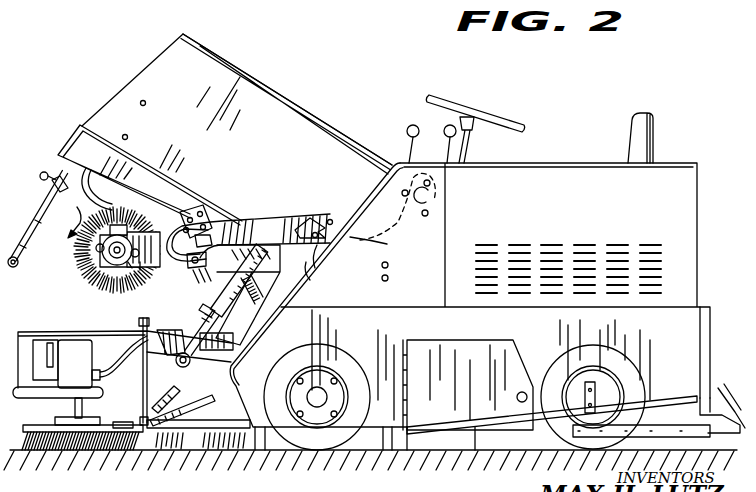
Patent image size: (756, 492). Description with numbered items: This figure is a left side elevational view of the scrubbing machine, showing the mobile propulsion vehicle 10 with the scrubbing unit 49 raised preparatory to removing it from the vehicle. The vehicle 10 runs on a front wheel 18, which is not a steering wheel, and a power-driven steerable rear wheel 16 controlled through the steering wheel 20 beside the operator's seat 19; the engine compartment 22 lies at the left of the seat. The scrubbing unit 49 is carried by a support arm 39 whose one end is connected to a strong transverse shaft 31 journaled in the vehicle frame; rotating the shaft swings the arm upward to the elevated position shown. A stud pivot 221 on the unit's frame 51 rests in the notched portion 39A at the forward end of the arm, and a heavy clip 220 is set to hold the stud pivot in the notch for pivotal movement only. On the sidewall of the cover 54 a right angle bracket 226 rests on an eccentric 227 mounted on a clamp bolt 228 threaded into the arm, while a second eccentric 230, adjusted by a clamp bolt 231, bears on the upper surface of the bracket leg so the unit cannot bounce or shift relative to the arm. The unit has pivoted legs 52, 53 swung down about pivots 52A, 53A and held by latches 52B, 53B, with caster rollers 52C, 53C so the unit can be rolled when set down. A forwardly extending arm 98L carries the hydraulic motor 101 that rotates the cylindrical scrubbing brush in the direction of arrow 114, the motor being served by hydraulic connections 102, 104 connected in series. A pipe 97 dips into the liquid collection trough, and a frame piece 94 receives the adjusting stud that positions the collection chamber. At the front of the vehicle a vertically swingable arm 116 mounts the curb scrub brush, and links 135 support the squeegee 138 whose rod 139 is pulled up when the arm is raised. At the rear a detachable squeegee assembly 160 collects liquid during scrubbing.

The mobile propulsion vehicle 10 is at (547, 180).
The rear wheel 16 is at (622, 360).
The front wheel 18 is at (337, 360).
The operator's seat 19 is at (655, 114).
The steering wheel 20 is at (490, 111).
The engine compartment 22 is at (582, 216).
The transverse shaft 31 is at (437, 203).
The support arm 39 is at (274, 226).
The notched portion of arm 39A is at (216, 233).
The scrubbing unit 49 is at (247, 109).
The frame 51 is at (88, 132).
The leg 52 is at (52, 222).
The leg pivot 52A is at (55, 160).
The leg latch 52B is at (48, 172).
The caster roller 52C is at (8, 275).
The leg 53 is at (250, 348).
The leg pivot 53A is at (194, 270).
The leg latch 53B is at (199, 313).
The caster roller 53C is at (234, 371).
The cover 54 is at (162, 72).
The frame piece 94 is at (261, 278).
The pipe 97 is at (254, 253).
The forwardly extending arm 98L is at (140, 297).
The hydraulic motor 101 is at (113, 256).
The hydraulic connection 102 is at (108, 190).
The hydraulic connection 104 is at (118, 150).
The arrow 114 is at (65, 212).
The vertically swingable arm 116 is at (82, 332).
The link 135 is at (200, 431).
The squeegee 138 is at (235, 452).
The rod 139 is at (138, 380).
The squeegee assembly 160 is at (725, 398).
The clip 220 is at (203, 218).
The stud pivot 221 is at (192, 205).
The right angle bracket 226 is at (295, 210).
The eccentric 227 is at (308, 266).
The clamp bolt 228 is at (322, 259).
The second eccentric 230 is at (329, 214).
The clamp bolt 231 is at (385, 247).